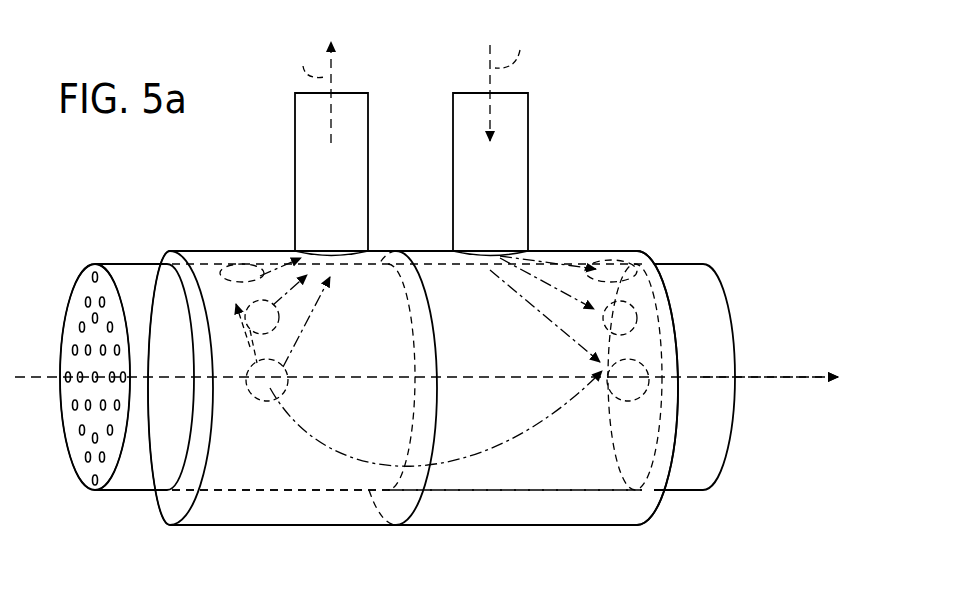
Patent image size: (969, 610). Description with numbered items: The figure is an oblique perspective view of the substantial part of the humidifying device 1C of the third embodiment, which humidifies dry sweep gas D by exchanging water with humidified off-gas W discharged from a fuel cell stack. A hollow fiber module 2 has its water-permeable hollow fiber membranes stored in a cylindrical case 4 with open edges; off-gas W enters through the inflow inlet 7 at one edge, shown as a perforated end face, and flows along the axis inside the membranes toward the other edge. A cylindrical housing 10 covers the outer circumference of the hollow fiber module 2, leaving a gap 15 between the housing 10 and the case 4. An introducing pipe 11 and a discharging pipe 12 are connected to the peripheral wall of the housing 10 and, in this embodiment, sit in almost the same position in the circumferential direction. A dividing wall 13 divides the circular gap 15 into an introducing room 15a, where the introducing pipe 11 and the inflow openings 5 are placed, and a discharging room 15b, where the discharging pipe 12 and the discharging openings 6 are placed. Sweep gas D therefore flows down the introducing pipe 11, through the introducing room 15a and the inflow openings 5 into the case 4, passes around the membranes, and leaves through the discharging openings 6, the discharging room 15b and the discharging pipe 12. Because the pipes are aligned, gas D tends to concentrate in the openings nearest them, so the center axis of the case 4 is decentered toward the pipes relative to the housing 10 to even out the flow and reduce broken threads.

The humidifying device 1C is at (187, 206).
The hollow fiber module 2 is at (131, 261).
The case 4 is at (122, 493).
The inflow openings 5 is at (668, 305).
The discharging openings 6 is at (240, 347).
The inflow inlet 7 is at (80, 430).
The housing 10 is at (603, 525).
The introducing pipe 11 is at (528, 170).
The discharging pipe 12 is at (295, 203).
The dividing wall 13 is at (437, 437).
The gap 15 is at (586, 260).
The introducing room 15a is at (573, 518).
The discharging room 15b is at (278, 512).
The sweep gas D is at (528, 443).
The off-gas W is at (787, 373).